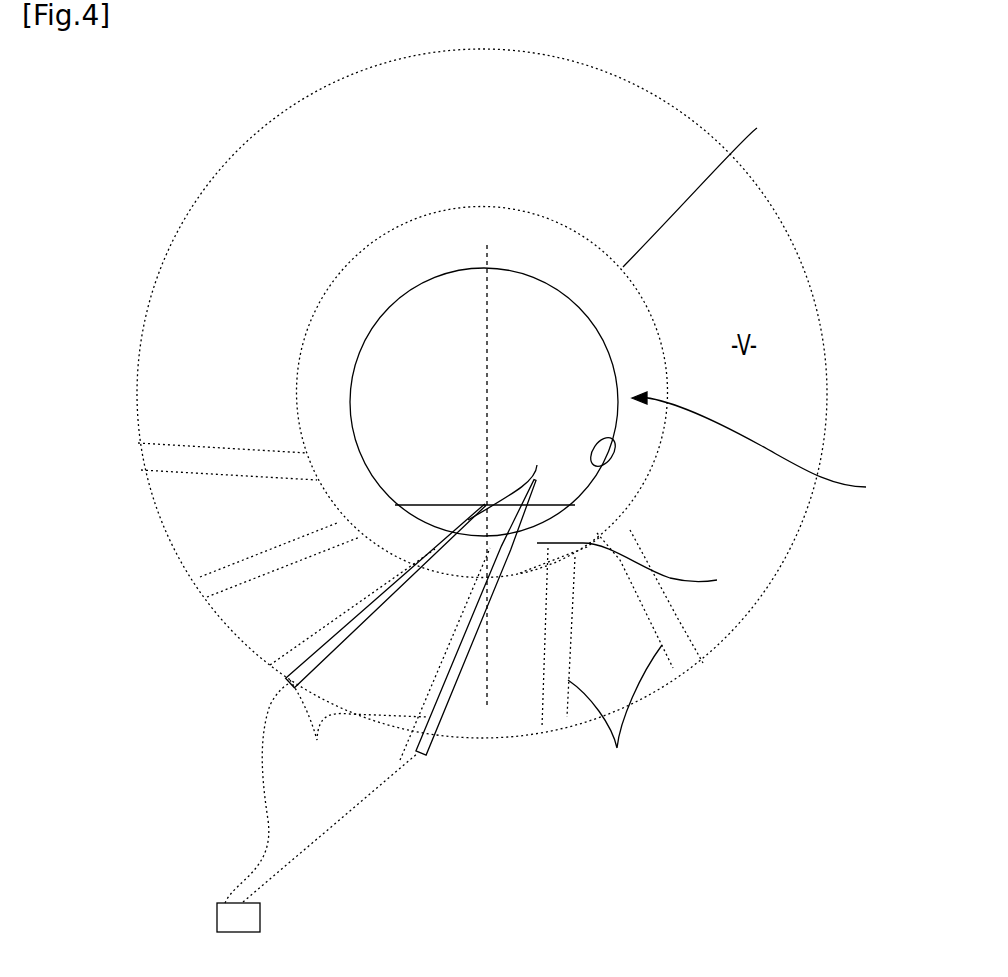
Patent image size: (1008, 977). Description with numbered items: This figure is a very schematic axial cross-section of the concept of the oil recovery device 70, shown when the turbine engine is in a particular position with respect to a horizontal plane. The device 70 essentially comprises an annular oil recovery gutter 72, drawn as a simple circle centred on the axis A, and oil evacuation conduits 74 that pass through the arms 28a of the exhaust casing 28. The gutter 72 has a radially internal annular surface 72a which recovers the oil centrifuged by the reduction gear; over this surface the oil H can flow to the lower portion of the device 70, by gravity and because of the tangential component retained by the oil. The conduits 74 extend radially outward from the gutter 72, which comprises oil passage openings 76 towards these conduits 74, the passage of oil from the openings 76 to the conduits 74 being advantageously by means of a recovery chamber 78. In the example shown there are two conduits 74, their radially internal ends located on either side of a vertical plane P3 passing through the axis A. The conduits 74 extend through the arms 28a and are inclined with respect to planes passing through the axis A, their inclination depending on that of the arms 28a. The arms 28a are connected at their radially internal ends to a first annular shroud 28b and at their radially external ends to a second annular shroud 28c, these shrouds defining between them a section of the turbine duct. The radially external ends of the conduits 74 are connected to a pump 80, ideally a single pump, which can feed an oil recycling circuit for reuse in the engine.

The exhaust casing 28 is at (745, 172).
The arms 28a is at (420, 617).
The first annular shroud 28b is at (417, 220).
The second annular shroud 28c is at (680, 112).
The device 70 is at (766, 449).
The annular oil recovery gutter 72 is at (542, 280).
The radially internal annular surface 72a is at (612, 448).
The oil evacuation conduits 74 is at (272, 664).
The oil passage openings 76 is at (509, 478).
The recovery chamber 78 is at (641, 572).
The pump 80 is at (262, 918).
The axis A is at (490, 375).
The oil H is at (461, 518).
The vertical plane P3 is at (487, 303).